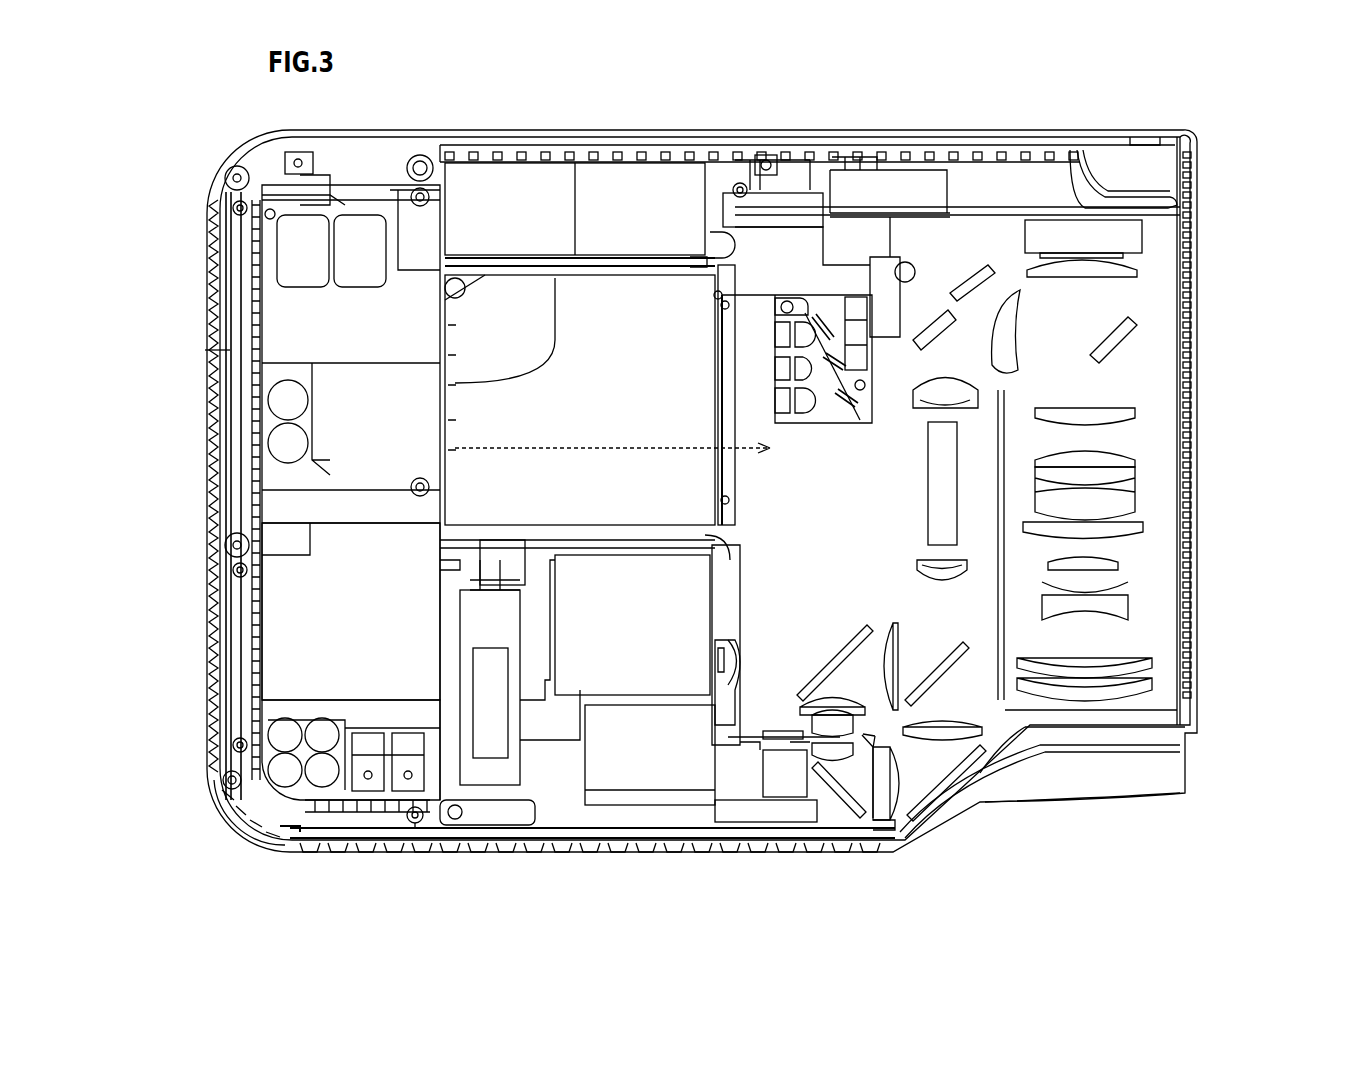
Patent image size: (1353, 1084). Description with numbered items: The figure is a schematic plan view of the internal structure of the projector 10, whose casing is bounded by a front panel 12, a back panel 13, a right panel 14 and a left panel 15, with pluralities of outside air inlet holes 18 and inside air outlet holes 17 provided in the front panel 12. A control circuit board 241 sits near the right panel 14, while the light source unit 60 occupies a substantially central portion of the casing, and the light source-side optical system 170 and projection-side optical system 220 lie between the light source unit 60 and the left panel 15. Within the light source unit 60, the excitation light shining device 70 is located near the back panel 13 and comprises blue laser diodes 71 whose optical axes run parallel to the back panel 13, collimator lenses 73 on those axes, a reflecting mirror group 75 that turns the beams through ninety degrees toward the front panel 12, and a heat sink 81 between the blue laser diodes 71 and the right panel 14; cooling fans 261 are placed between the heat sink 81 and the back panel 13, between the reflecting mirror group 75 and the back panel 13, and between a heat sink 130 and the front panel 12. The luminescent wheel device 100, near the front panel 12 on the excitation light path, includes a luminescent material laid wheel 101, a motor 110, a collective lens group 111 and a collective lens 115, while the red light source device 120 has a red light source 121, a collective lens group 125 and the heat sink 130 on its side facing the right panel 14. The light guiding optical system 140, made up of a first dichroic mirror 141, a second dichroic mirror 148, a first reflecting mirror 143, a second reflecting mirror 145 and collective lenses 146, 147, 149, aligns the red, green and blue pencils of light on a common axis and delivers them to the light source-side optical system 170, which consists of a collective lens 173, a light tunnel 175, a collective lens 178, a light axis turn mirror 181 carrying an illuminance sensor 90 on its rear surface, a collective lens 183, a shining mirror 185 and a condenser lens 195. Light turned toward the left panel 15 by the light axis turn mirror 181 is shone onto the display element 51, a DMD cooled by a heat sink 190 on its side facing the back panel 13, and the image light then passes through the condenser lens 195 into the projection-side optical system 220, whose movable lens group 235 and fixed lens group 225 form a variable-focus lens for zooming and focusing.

The projector 10 is at (1214, 121).
The front panel 12 is at (362, 856).
The back panel 13 is at (565, 139).
The right panel 14 is at (226, 350).
The left panel 15 is at (1198, 665).
The inside air outlet holes 17 is at (208, 388).
The outside air inlet holes 18 is at (523, 131).
The display element 51 is at (1120, 243).
The light source unit 60 is at (330, 447).
The excitation light shining device 70 is at (745, 285).
The blue laser diodes 71 is at (775, 401).
The collimator lenses 73 is at (775, 366).
The reflecting mirror group 75 is at (831, 411).
The heat sink 81 is at (612, 360).
The illuminance sensor 90 is at (935, 305).
The luminescent wheel device 100 is at (780, 801).
The luminescent material laid wheel 101 is at (740, 740).
The motor 110 is at (789, 791).
The collective lens group 111 is at (864, 737).
The collective lens 115 is at (870, 775).
The red light source device 120 is at (703, 690).
The red light source 121 is at (705, 660).
The collective lens group 125 is at (713, 638).
The heat sink 130 is at (600, 624).
The light guiding optical system 140 is at (1004, 745).
The first dichroic mirror 141 is at (830, 665).
The first reflecting mirror 143 is at (845, 800).
The second reflecting mirror 145 is at (950, 780).
The collective lens 146 is at (918, 785).
The collective lens 147 is at (958, 722).
The second dichroic mirror 148 is at (935, 670).
The collective lens 149 is at (893, 625).
The light source-side optical system 170 is at (972, 240).
The collective lens 173 is at (945, 575).
The light tunnel 175 is at (945, 543).
The collective lens 178 is at (945, 388).
The light axis turn mirror 181 is at (958, 292).
The collective lens 183 is at (1020, 313).
The shining mirror 185 is at (1115, 347).
The heat sink 190 is at (1045, 175).
The condenser lens 195 is at (1125, 270).
The projection-side optical system 220 is at (1154, 504).
The fixed lens group 225 is at (1125, 700).
The movable lens group 235 is at (1156, 445).
The control circuit board 241 is at (330, 570).
The cooling fan 261 is at (470, 205).